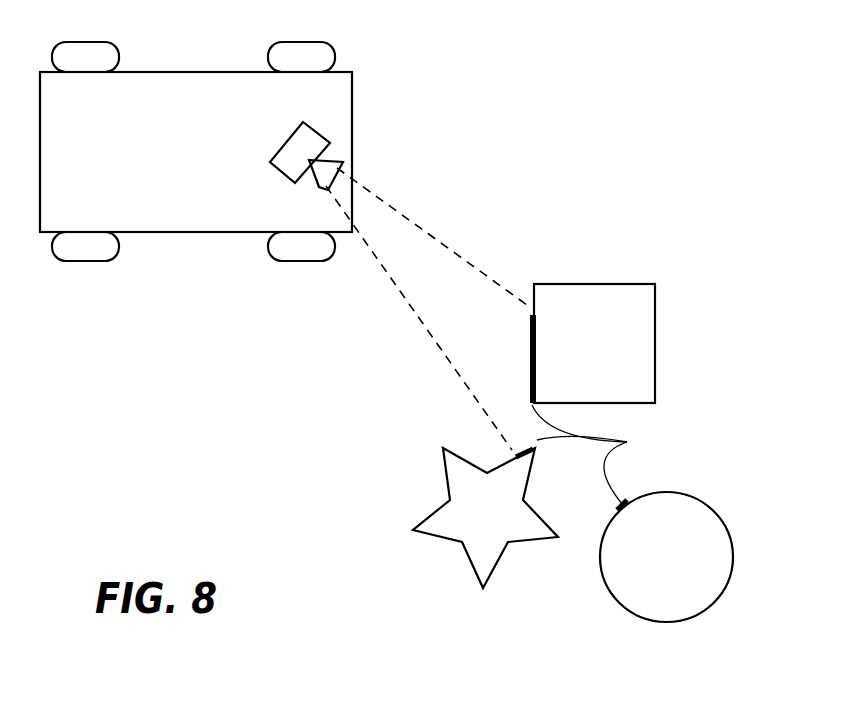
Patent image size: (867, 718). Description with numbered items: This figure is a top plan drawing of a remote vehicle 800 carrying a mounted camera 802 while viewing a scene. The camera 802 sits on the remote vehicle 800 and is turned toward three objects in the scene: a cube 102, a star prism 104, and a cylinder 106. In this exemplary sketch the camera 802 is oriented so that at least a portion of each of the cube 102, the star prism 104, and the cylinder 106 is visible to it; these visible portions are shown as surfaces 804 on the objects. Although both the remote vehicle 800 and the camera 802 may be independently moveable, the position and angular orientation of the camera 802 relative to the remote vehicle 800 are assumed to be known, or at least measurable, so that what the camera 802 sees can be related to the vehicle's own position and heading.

The remote vehicle 800 is at (183, 77).
The mounted camera 802 is at (308, 138).
The cube 102 is at (632, 295).
The star prism 104 is at (443, 535).
The cylinder 106 is at (627, 600).
The surfaces 804 is at (601, 455).